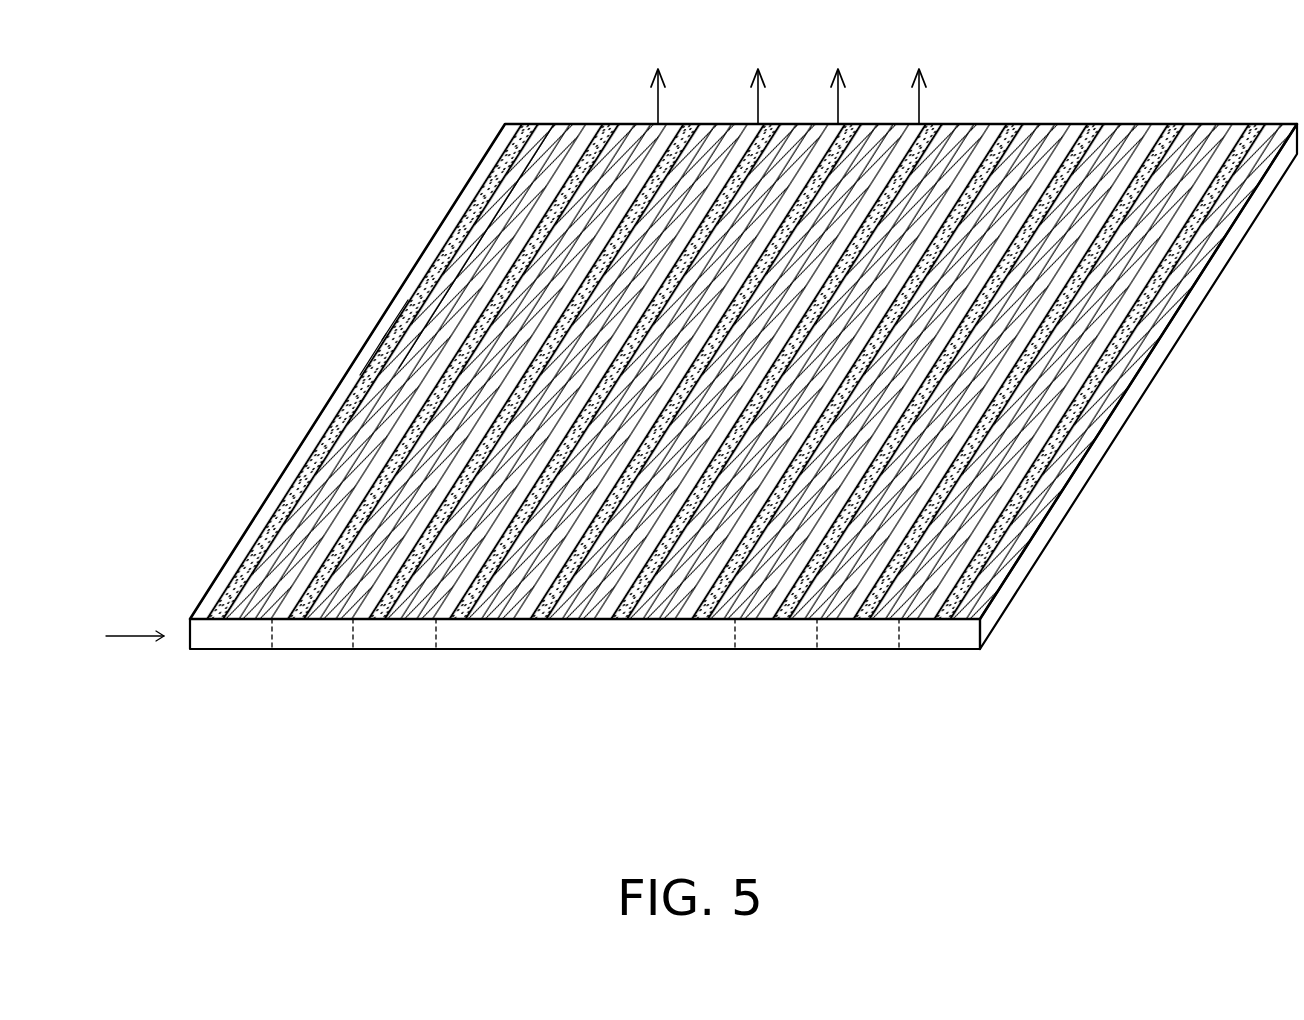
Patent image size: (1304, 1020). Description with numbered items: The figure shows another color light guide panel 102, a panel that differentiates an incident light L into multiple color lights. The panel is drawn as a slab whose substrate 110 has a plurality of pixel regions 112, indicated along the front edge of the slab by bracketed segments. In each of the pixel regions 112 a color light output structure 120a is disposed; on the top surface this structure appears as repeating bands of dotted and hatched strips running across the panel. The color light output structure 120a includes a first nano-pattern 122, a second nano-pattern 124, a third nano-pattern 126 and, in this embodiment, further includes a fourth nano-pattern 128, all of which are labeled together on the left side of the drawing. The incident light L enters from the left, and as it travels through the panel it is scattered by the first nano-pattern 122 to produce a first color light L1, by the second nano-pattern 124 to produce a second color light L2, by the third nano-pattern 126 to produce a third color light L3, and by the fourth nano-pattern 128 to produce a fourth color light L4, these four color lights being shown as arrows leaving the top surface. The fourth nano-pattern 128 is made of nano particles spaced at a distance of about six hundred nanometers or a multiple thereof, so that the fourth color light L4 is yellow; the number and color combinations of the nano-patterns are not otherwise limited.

The color light guide panel 102 is at (741, 447).
The substrate 110 is at (1052, 527).
The pixel regions 112 is at (190, 660).
The color light output structure 120a is at (370, 269).
The first nano-pattern 122 is at (322, 388).
The second nano-pattern 124 is at (377, 354).
The third nano-pattern 126 is at (390, 320).
The fourth nano-pattern 128 is at (440, 308).
The incident light L is at (122, 636).
The first color light L1 is at (919, 108).
The second color light L2 is at (838, 108).
The third color light L3 is at (758, 108).
The fourth color light L4 is at (658, 108).